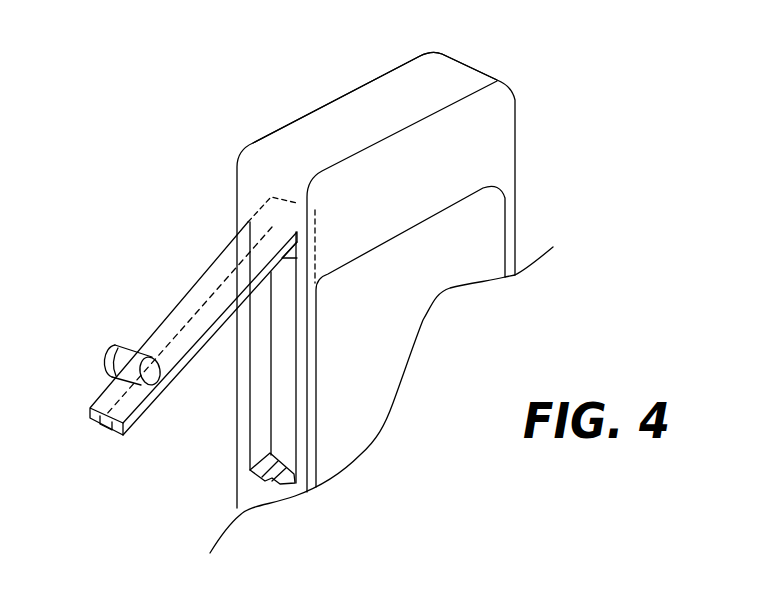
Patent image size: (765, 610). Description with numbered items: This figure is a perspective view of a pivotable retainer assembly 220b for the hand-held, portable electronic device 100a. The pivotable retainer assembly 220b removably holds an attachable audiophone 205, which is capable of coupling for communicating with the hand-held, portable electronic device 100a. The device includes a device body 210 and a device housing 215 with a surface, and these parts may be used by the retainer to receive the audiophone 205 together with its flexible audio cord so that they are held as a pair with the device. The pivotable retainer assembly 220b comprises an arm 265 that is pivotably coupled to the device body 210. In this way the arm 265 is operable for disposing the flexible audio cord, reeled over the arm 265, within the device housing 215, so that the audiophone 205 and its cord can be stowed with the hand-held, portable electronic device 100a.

The hand-held, portable electronic device 100a is at (566, 125).
The audiophone 205 is at (250, 128).
The device housing 215 is at (467, 62).
The device body 210 is at (472, 232).
The pivotable retainer assembly 220b is at (176, 329).
The arm 265 is at (197, 352).